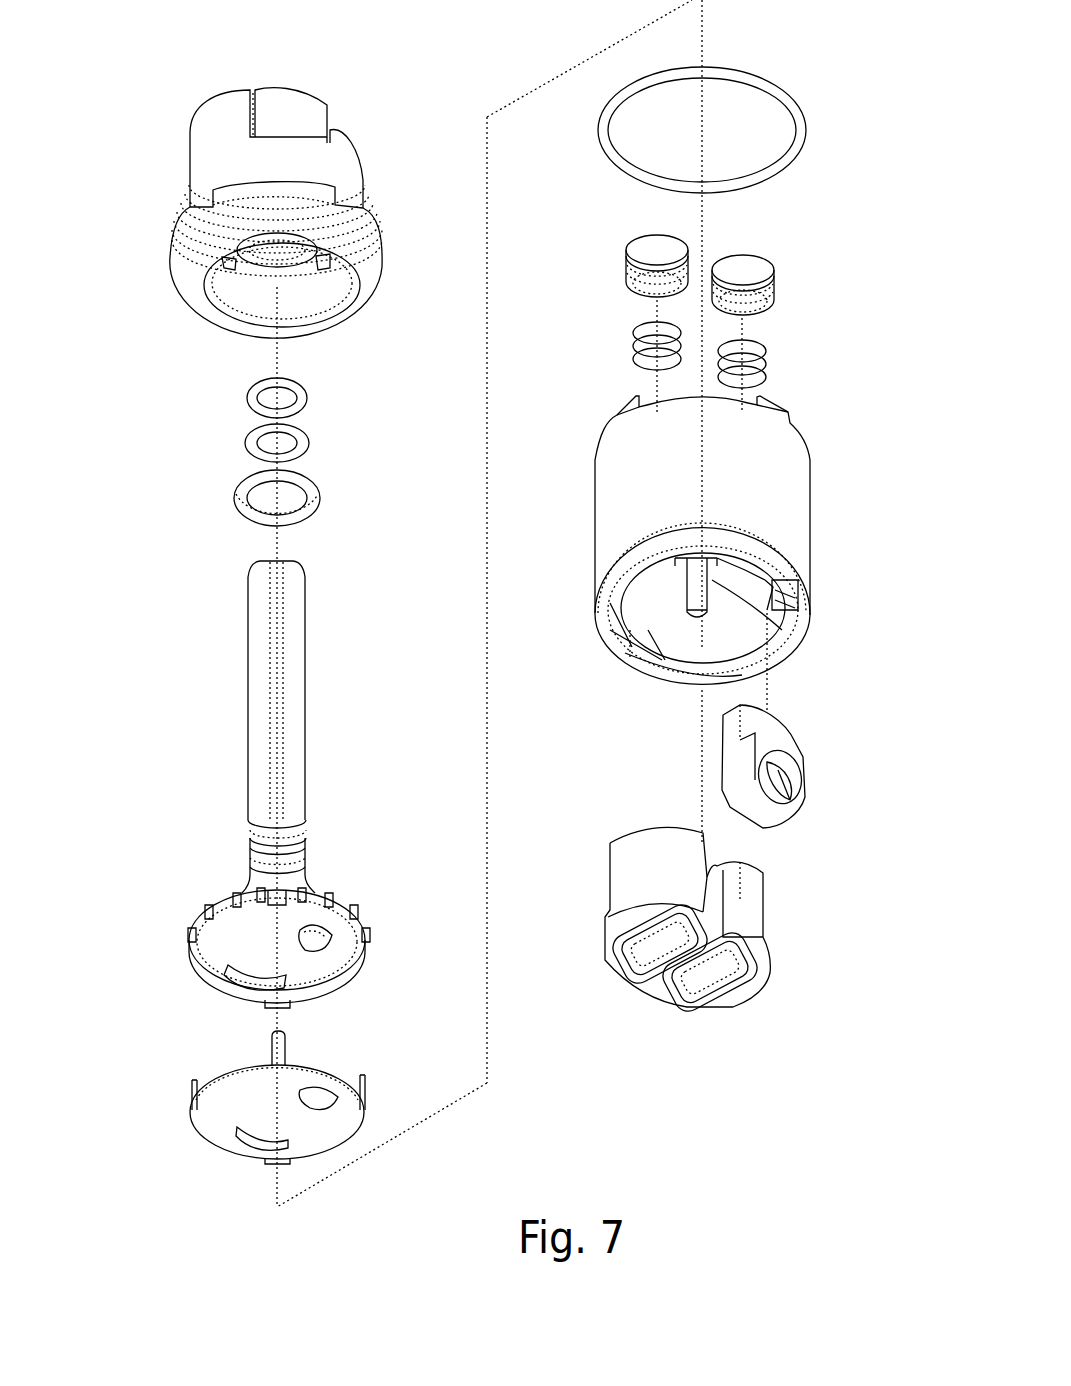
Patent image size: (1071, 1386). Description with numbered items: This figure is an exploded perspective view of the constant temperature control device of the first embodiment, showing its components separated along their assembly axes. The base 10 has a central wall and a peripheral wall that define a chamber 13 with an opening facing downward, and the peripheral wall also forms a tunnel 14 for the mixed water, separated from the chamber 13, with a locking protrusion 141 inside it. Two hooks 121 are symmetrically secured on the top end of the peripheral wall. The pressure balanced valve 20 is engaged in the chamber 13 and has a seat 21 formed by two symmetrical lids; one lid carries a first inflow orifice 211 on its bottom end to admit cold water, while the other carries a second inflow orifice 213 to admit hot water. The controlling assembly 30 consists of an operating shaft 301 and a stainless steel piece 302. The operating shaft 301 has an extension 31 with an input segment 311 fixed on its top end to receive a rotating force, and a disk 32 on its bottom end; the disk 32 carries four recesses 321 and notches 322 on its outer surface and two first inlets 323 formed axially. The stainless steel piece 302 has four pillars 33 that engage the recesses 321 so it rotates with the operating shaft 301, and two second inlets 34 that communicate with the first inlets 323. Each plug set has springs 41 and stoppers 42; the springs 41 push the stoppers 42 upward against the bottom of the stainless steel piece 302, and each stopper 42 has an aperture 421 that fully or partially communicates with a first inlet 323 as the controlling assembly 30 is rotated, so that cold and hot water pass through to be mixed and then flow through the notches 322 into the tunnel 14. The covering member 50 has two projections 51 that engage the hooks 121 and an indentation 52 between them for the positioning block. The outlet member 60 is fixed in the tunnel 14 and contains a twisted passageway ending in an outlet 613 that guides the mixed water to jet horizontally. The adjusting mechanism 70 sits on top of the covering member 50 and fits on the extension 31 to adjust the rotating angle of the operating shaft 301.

The base 10 is at (705, 537).
The hooks 121 is at (793, 393).
The chamber 13 is at (647, 615).
The tunnel 14 is at (760, 587).
The locking protrusion 141 is at (792, 618).
The pressure balanced valve 20 is at (718, 943).
The seat 21 is at (608, 883).
The first inflow orifice 211 is at (647, 940).
The second inflow orifice 213 is at (720, 980).
The controlling assembly 30 is at (347, 724).
The operating shaft 301 is at (392, 757).
The stainless steel piece 302 is at (251, 1121).
The extension 31 is at (292, 773).
The input segment 311 is at (293, 562).
The disk 32 is at (318, 895).
The recesses 321 is at (273, 898).
The notches 322 is at (285, 925).
The first inlets 323 is at (327, 947).
The pillars 33 is at (190, 1093).
The second inlets 34 is at (330, 1097).
The springs 41 is at (637, 353).
The stoppers 42 is at (703, 243).
The aperture 421 is at (647, 282).
The covering member 50 is at (190, 173).
The projections 51 is at (205, 205).
The indentation 52 is at (265, 247).
The outlet member 60 is at (809, 753).
The outlet 613 is at (788, 780).
The adjusting mechanism 70 is at (322, 100).